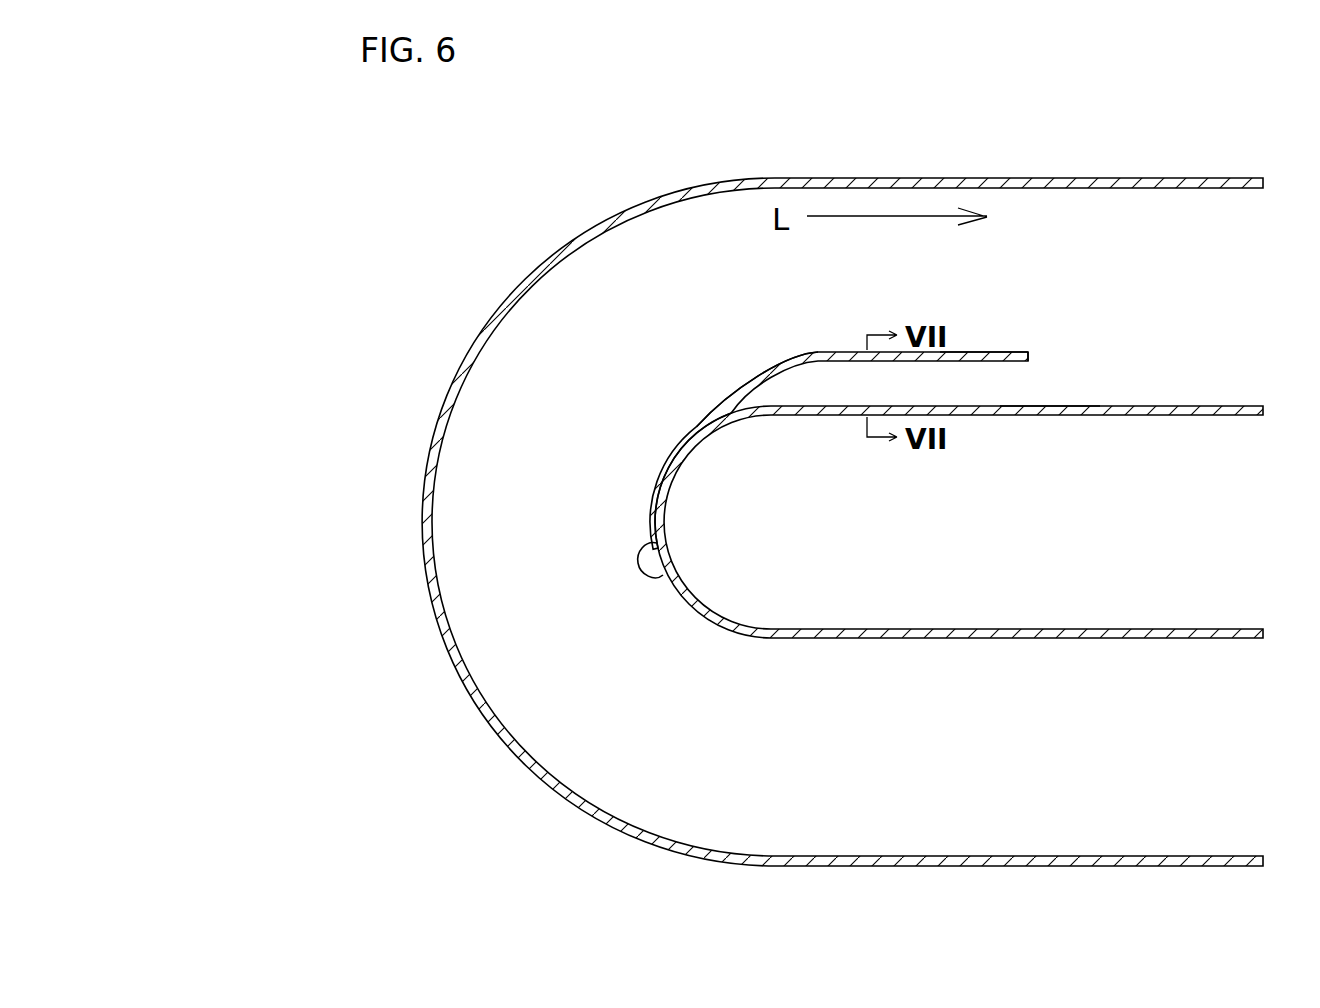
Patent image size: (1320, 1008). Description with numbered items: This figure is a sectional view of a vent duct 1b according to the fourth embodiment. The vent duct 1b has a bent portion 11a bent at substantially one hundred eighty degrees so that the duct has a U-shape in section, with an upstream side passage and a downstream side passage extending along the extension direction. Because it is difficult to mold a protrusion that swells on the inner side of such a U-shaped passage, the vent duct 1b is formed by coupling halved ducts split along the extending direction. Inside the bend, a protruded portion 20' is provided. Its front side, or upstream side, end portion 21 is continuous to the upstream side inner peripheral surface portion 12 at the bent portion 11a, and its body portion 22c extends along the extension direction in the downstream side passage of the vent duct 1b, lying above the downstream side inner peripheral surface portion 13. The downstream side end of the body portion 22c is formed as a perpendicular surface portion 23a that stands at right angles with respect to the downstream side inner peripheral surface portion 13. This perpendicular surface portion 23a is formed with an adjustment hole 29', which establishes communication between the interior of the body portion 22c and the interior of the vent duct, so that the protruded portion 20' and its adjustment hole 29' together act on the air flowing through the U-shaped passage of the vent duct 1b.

The vent duct 1b is at (1142, 147).
The bent portion 11a is at (533, 338).
The downstream side inner peripheral surface portion 13 is at (1170, 410).
The upstream side inner peripheral surface portion 12 is at (663, 573).
The protruded portion 20' is at (880, 399).
The front side end portion 21 is at (780, 367).
The body portion 22c is at (977, 352).
The perpendicular surface portion 23a is at (1030, 355).
The adjustment hole 29' is at (1068, 386).